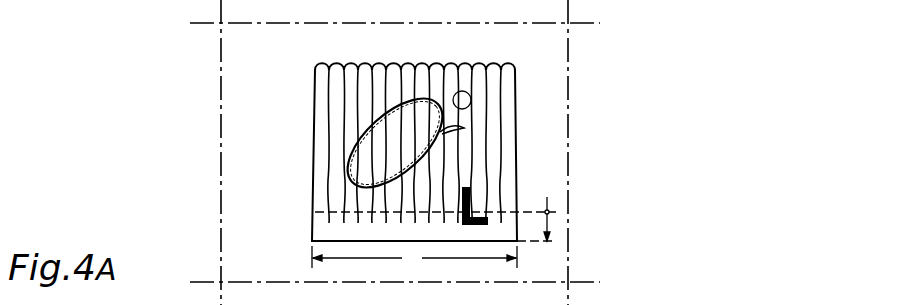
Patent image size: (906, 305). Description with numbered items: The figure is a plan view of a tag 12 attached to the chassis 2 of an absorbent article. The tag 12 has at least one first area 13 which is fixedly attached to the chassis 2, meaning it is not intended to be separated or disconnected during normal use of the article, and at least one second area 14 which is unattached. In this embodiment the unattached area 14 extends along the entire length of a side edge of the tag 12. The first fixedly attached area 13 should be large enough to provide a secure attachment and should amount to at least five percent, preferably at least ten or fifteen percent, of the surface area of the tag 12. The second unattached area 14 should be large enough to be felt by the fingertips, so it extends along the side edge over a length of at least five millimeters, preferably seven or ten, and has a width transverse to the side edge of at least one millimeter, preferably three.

The chassis 2 is at (257, 163).
The tag 12 is at (298, 98).
The first fixedly attached area 13 is at (490, 138).
The second unattached area 14 is at (338, 225).